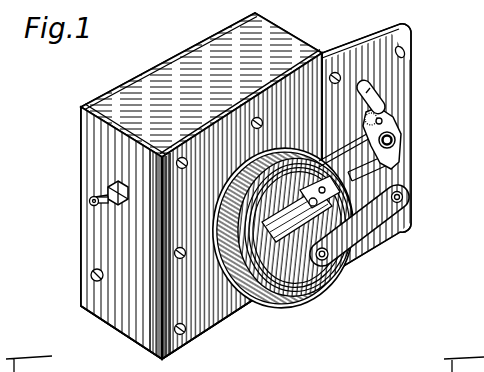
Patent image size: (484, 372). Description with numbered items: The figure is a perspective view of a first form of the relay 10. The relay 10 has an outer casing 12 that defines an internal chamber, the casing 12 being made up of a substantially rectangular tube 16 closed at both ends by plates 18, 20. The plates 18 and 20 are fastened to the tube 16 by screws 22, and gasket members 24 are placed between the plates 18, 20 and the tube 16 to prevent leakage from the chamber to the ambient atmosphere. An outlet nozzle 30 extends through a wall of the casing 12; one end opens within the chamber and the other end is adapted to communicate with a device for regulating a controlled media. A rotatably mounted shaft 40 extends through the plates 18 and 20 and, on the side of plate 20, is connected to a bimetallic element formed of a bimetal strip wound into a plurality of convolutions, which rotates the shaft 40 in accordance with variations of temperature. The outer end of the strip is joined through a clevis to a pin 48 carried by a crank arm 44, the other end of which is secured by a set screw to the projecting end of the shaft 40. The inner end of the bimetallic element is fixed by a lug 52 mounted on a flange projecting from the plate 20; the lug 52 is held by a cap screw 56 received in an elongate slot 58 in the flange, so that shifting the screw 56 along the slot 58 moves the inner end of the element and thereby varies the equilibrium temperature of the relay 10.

The relay 10 is at (78, 243).
The outer casing 12 is at (106, 160).
The rectangular tube 16 is at (122, 105).
The plate 18 is at (80, 118).
The plate 20 is at (320, 52).
The screws 22 is at (186, 340).
The gasket members 24 is at (148, 343).
The outlet nozzle 30 is at (96, 194).
The rotatably mounted shaft 40 is at (298, 249).
The crank arm 44 is at (375, 226).
The pin 48 is at (403, 197).
The lug 52 is at (292, 188).
The cap screw 56 is at (398, 140).
The elongate slot 58 is at (386, 96).